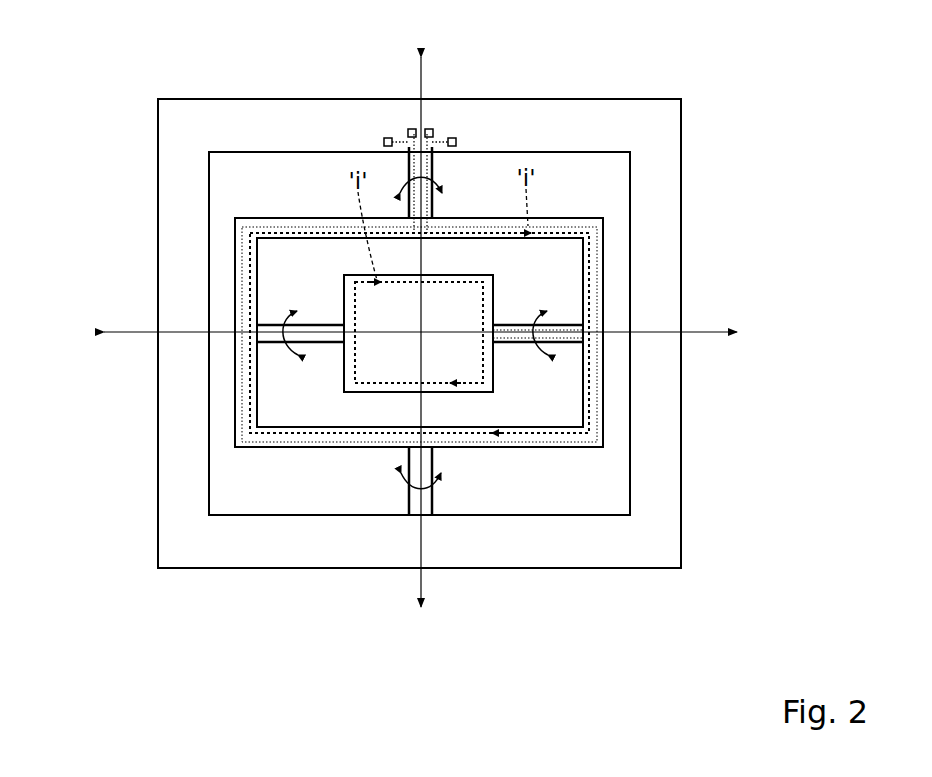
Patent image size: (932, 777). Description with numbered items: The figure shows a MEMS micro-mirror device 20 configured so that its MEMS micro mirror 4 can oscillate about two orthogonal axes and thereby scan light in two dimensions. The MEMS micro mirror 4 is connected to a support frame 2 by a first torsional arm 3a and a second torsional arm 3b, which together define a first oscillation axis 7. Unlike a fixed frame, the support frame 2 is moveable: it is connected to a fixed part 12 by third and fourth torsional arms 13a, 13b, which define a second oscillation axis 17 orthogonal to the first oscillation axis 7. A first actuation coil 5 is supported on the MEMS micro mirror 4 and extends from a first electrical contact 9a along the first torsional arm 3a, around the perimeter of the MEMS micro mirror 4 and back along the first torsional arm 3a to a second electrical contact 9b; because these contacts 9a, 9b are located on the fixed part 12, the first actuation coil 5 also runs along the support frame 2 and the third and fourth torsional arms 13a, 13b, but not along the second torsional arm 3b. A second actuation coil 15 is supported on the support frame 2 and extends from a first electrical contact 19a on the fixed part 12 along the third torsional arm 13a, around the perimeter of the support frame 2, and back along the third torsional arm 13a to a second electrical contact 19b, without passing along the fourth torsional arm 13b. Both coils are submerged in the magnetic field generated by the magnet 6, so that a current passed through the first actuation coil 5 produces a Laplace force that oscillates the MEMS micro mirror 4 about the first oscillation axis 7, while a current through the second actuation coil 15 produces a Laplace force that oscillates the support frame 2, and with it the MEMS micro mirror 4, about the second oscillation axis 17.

The support frame 2 is at (238, 447).
The first torsional arm 3a is at (515, 338).
The second torsional arm 3b is at (317, 342).
The MEMS micro mirror 4 is at (375, 372).
The first actuation coil 5 is at (488, 288).
The magnet 6 is at (503, 495).
The first oscillation axis 7 is at (697, 335).
The first electrical contact 9a is at (409, 130).
The second electrical contact 9b is at (433, 129).
The fixed part 12 is at (603, 545).
The third torsional arm 13a is at (424, 126).
The fourth torsional arm 13b is at (413, 507).
The second actuation coil 15 is at (598, 268).
The second oscillation axis 17 is at (422, 578).
The first electrical contact 19a is at (384, 140).
The second electrical contact 19b is at (456, 140).
The MEMS micro-mirror device 20 is at (531, 343).